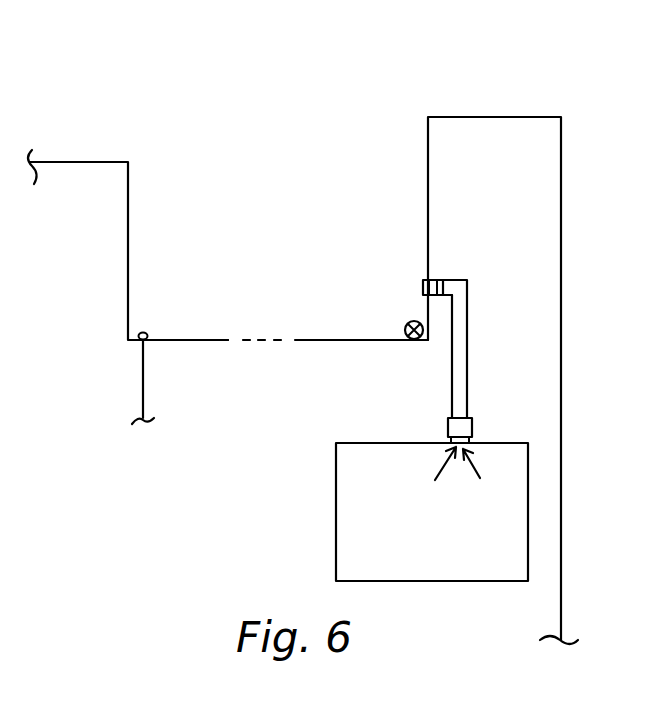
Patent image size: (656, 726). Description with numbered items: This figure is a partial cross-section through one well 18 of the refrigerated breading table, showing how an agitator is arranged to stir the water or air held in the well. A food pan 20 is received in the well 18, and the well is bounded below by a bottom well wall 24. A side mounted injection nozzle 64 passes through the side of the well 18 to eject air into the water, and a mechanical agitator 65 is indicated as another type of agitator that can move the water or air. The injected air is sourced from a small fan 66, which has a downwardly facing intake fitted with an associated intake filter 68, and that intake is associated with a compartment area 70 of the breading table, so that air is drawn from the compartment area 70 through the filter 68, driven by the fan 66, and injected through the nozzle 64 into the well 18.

The well 18 is at (387, 117).
The food pan 20 is at (128, 222).
The bottom well wall 24 is at (195, 338).
The injection nozzle 64 is at (425, 280).
The mechanical agitator 65 is at (404, 330).
The fan 66 is at (472, 432).
The intake filter 68 is at (448, 440).
The compartment area 70 is at (413, 522).